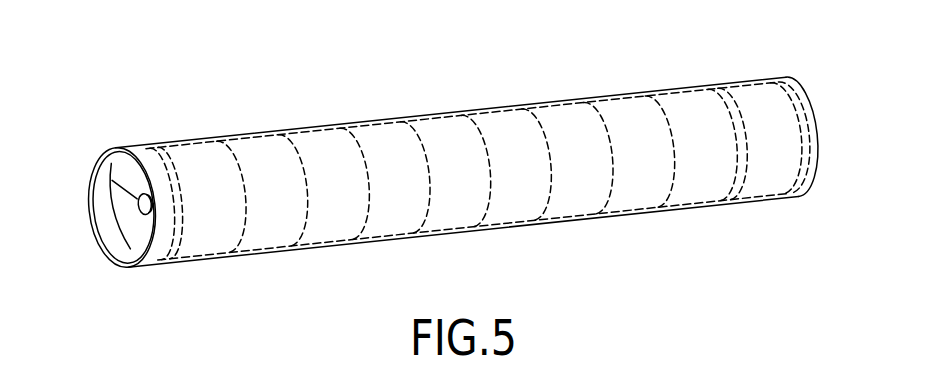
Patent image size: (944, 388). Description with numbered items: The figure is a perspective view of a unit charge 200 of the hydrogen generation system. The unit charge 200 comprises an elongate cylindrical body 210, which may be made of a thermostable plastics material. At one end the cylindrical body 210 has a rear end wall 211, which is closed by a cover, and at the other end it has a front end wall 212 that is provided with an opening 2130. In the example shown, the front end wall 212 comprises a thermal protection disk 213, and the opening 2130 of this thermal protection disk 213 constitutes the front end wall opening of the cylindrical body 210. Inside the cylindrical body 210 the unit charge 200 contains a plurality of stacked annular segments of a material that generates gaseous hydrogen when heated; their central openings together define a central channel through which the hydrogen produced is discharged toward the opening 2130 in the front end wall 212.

The unit charge 200 is at (453, 83).
The cylindrical body 210 is at (300, 247).
The rear end wall 211 is at (818, 128).
The front end wall 212 is at (95, 237).
The thermal protection disk 213 is at (130, 211).
The opening 2130 is at (111, 178).